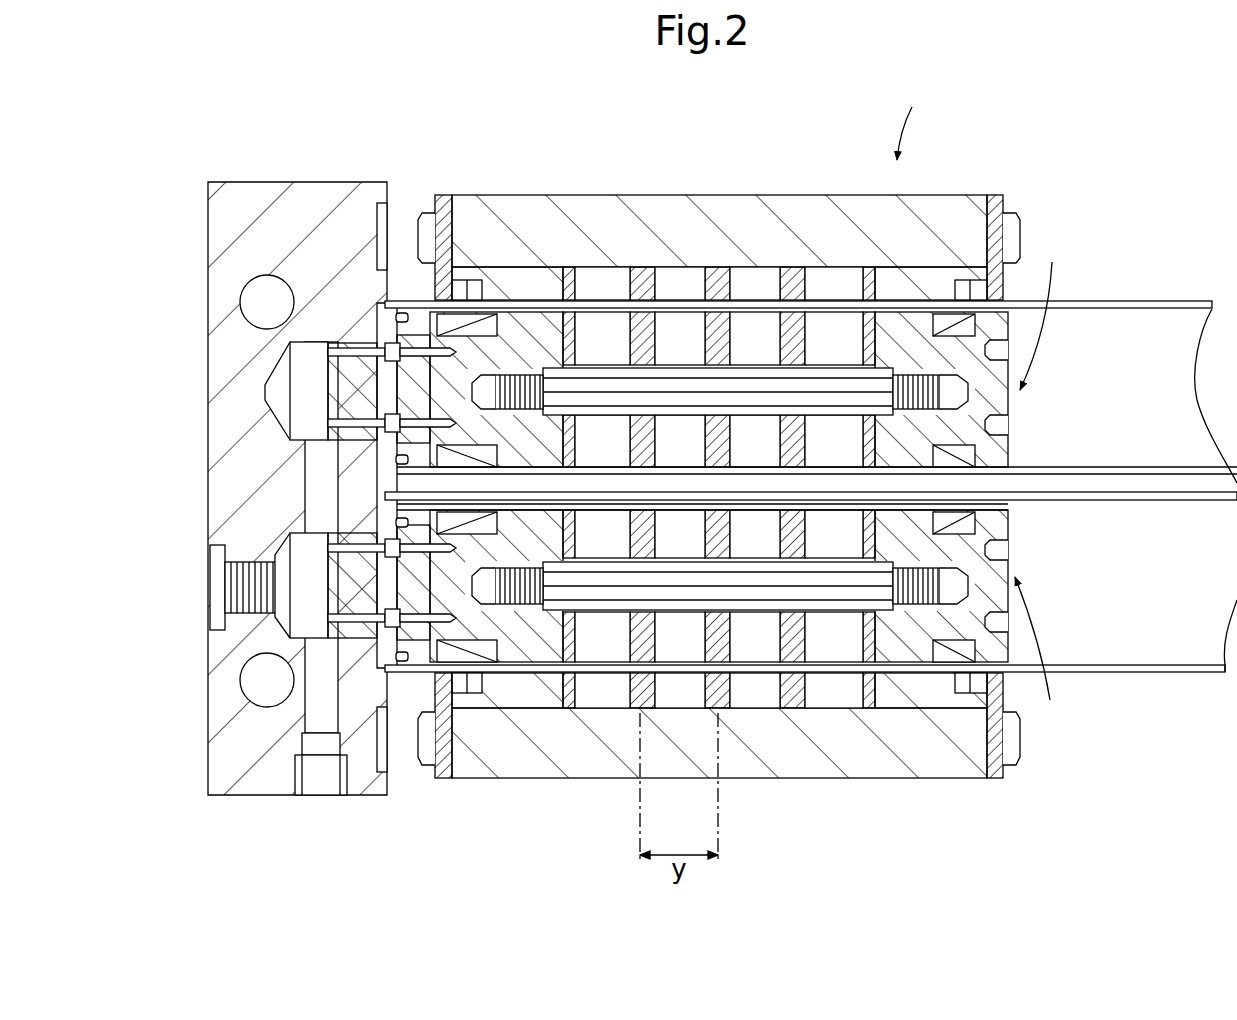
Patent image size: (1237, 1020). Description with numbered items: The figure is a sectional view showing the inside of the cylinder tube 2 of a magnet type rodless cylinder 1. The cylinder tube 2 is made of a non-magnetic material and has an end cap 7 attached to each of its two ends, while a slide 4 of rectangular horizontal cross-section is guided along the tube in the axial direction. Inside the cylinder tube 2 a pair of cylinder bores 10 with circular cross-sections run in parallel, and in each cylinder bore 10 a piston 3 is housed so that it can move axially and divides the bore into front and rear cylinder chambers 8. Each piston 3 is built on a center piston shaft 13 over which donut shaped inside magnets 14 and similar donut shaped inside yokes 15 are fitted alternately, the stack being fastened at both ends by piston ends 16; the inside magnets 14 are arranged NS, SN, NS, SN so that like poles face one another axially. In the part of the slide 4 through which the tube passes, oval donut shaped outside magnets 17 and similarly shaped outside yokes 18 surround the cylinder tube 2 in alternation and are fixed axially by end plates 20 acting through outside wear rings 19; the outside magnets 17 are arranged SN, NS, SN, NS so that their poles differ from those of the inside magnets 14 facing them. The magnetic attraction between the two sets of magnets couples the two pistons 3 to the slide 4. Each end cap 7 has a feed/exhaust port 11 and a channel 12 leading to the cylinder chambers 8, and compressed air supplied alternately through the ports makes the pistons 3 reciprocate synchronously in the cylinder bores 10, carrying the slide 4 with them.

The magnet type rodless cylinder 1 is at (910, 119).
The cylinder tube 2 is at (1097, 300).
The piston 3 is at (1038, 479).
The slide 4 is at (852, 217).
The end cap 7 is at (224, 237).
The cylinder chamber 8 is at (1135, 330).
The cylinder bore 10 is at (1178, 318).
The feed/exhaust port 11 is at (218, 592).
The channel 12 is at (320, 497).
The piston shaft 13 is at (543, 375).
The inside magnet 14 is at (680, 325).
The inside yoke 15 is at (642, 330).
The piston end 16 is at (512, 342).
The outside magnet 17 is at (600, 278).
The outside yoke 18 is at (720, 278).
The outside wear ring 19 is at (530, 690).
The end plate 20 is at (436, 213).